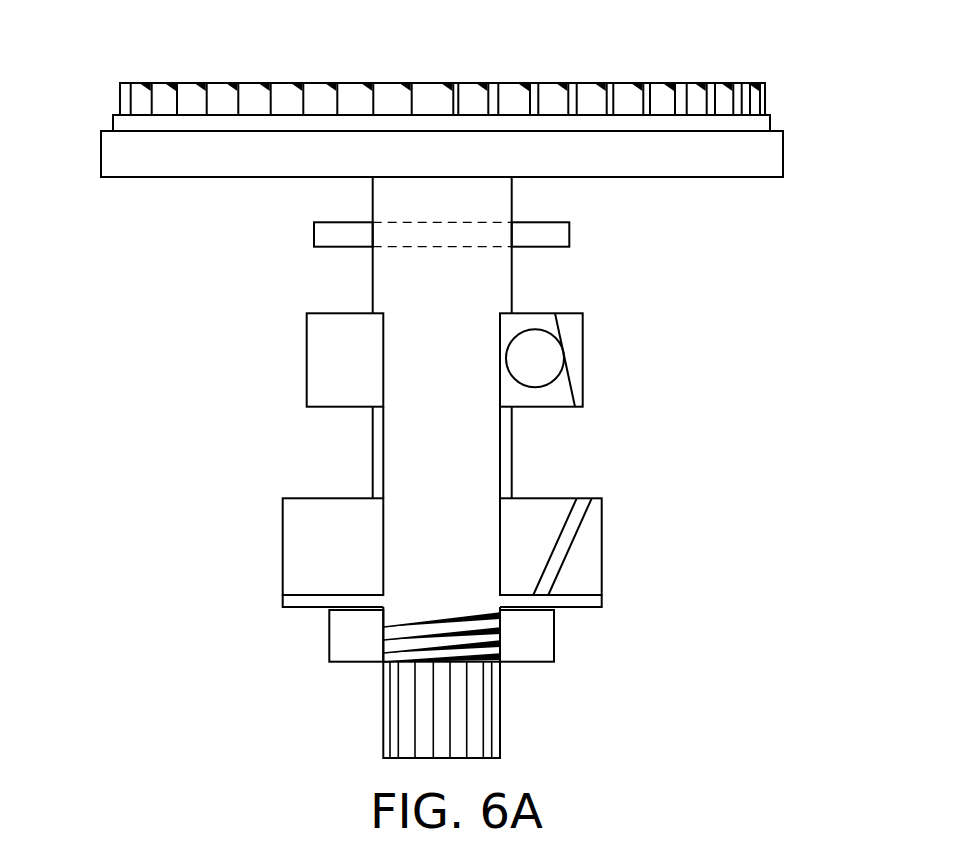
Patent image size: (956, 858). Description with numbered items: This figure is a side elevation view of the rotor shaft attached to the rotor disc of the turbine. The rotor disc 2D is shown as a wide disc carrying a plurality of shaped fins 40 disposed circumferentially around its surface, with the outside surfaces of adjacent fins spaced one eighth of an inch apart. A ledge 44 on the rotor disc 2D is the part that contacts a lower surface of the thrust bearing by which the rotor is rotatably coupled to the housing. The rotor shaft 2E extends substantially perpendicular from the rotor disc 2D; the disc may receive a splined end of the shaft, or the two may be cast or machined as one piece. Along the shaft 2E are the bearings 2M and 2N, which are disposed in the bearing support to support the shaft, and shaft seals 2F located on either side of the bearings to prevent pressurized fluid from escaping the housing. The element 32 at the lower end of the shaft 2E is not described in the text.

The rotor disc 2D is at (742, 160).
The ledge 44 is at (101, 130).
The shaped fins 40 is at (697, 76).
The rotor shaft 2E is at (486, 283).
The shaft seals 2F is at (569, 235).
The bearing 2M is at (583, 350).
The bearing 2N is at (602, 527).
The gear 32 is at (500, 708).